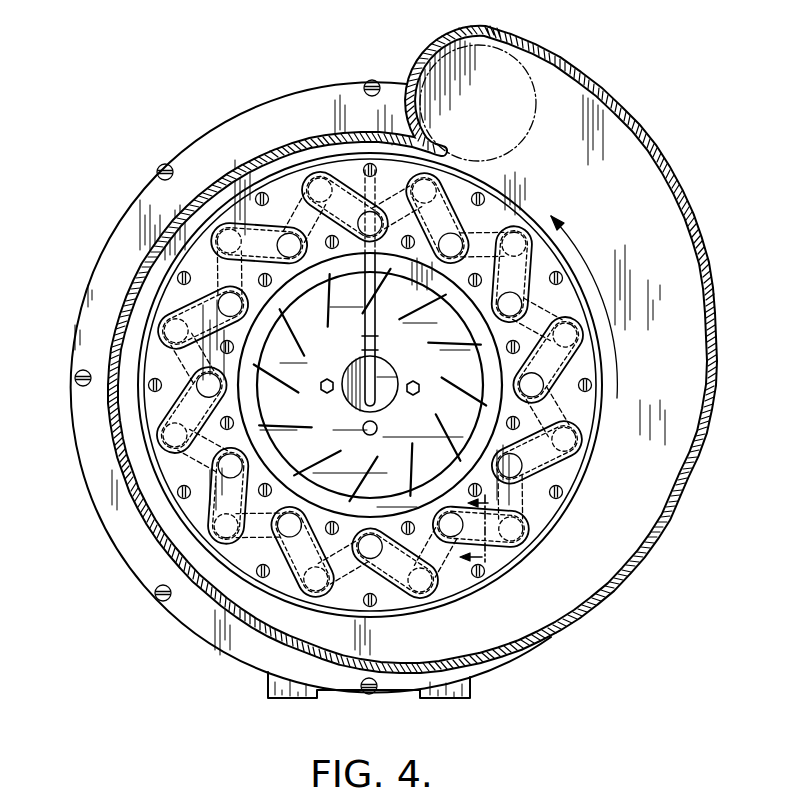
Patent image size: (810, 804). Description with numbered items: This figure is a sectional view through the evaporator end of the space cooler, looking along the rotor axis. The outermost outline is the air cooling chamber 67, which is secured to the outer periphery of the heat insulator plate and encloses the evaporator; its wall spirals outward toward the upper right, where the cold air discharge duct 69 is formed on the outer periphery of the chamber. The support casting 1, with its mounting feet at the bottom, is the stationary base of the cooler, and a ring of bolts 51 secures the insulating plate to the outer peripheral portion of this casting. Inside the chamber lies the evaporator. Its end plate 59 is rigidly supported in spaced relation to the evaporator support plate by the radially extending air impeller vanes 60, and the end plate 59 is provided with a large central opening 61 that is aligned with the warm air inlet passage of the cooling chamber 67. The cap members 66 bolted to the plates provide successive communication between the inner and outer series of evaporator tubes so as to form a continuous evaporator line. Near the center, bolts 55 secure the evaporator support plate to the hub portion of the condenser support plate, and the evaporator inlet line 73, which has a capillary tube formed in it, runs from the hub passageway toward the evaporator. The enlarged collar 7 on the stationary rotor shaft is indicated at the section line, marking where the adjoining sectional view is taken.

The support casting 1 is at (268, 688).
The bolts 51 is at (374, 80).
The bolts 55 is at (327, 394).
The end plate 59 is at (240, 578).
The air impeller vanes 60 is at (470, 338).
The central opening 61 is at (285, 458).
The cap members 66 is at (548, 528).
The air cooling chamber 67 is at (670, 523).
The cold air discharge duct 69 is at (458, 30).
The evaporator inlet line 73 is at (365, 336).
The enlarged collar 7 is at (485, 529).